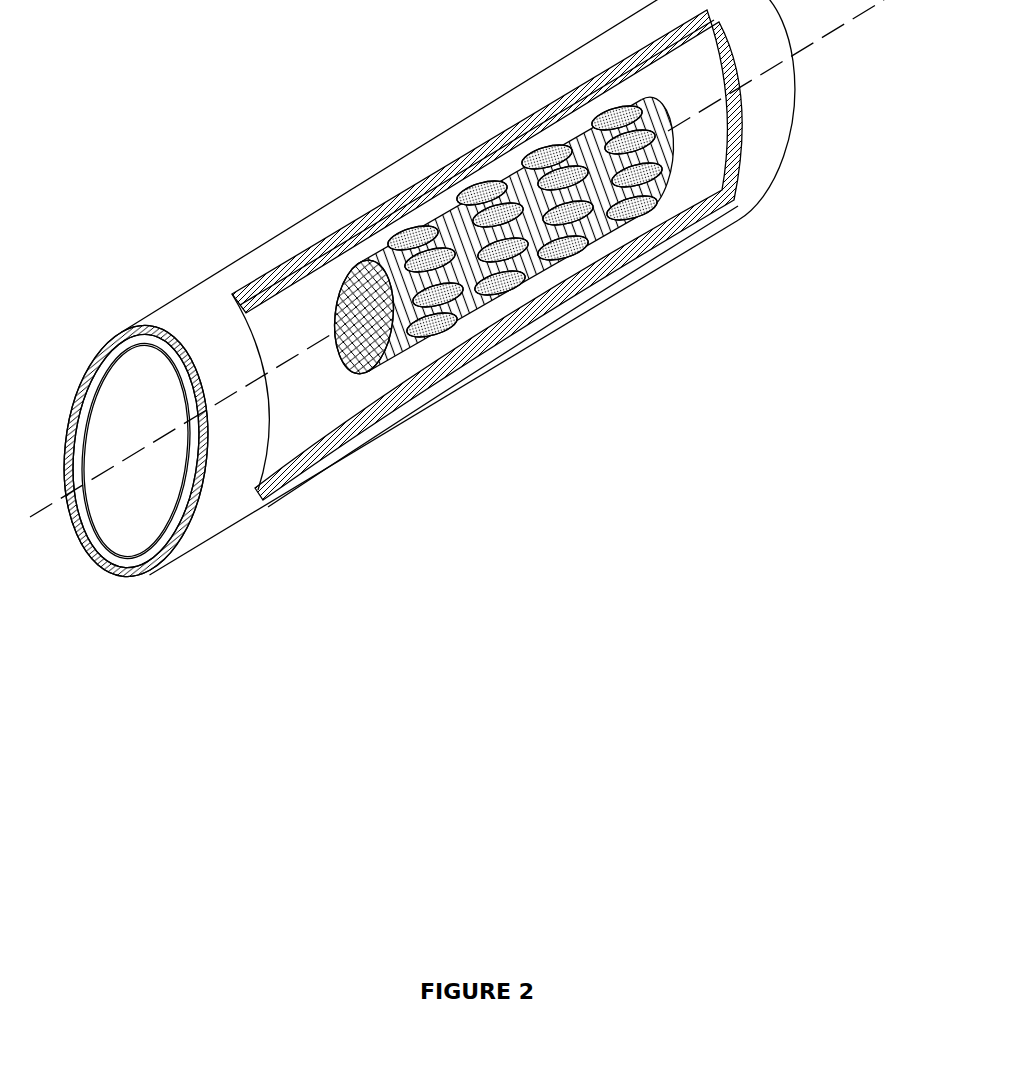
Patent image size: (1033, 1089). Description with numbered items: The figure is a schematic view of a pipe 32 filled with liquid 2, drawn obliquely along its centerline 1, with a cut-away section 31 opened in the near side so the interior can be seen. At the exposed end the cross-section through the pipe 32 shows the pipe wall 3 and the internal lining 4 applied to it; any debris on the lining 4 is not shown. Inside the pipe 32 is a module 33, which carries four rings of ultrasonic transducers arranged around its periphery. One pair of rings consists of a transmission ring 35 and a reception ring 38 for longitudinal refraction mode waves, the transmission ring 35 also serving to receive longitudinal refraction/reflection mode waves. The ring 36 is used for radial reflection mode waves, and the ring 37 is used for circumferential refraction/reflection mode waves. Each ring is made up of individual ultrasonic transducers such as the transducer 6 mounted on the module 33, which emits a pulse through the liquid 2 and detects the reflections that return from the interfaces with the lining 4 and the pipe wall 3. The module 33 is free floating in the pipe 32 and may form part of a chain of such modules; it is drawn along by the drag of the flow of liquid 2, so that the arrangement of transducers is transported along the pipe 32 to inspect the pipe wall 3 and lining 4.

The centerline 1 is at (823, 43).
The liquid 2 is at (136, 451).
The pipe wall 3 is at (143, 575).
The internal lining 4 is at (117, 553).
The ultrasonic transducer 6 is at (510, 323).
The cut-away section 31 is at (557, 93).
The pipe 32 is at (203, 543).
The module 33 is at (375, 363).
The transmission ring 35 is at (430, 233).
The ring for radial reflection mode waves 36 is at (560, 192).
The ring for circumferential refraction/reflection mode waves 37 is at (636, 205).
The reception ring 38 is at (712, 192).